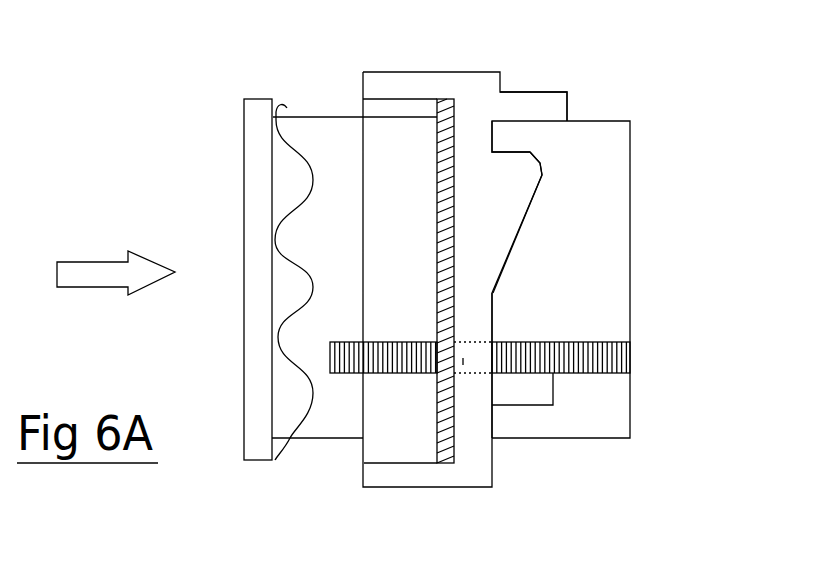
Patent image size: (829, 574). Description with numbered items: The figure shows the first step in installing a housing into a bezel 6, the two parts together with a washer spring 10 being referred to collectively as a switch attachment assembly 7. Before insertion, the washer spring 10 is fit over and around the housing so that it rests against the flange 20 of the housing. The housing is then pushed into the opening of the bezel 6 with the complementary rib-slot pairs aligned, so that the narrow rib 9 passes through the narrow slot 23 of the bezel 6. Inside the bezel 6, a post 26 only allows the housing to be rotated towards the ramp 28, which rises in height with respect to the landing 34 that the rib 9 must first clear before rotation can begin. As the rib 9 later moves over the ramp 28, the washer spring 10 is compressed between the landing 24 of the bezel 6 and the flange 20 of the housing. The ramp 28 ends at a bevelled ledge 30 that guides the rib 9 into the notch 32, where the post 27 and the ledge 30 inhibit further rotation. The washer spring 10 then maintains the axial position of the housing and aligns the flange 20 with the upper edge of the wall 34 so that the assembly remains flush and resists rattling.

The bezel 6 is at (478, 57).
The switch attachment assembly 7 is at (646, 241).
The narrow rib 9 is at (617, 363).
The washer spring 10 is at (287, 108).
The flange 20 is at (255, 105).
The narrow slot 23 is at (463, 358).
The landing 24 is at (450, 292).
The post 26 is at (530, 398).
The post 27 is at (538, 102).
The ramp 28 is at (525, 225).
The ledge 30 is at (540, 163).
The notch 32 is at (497, 137).
The landing 34 is at (398, 107).